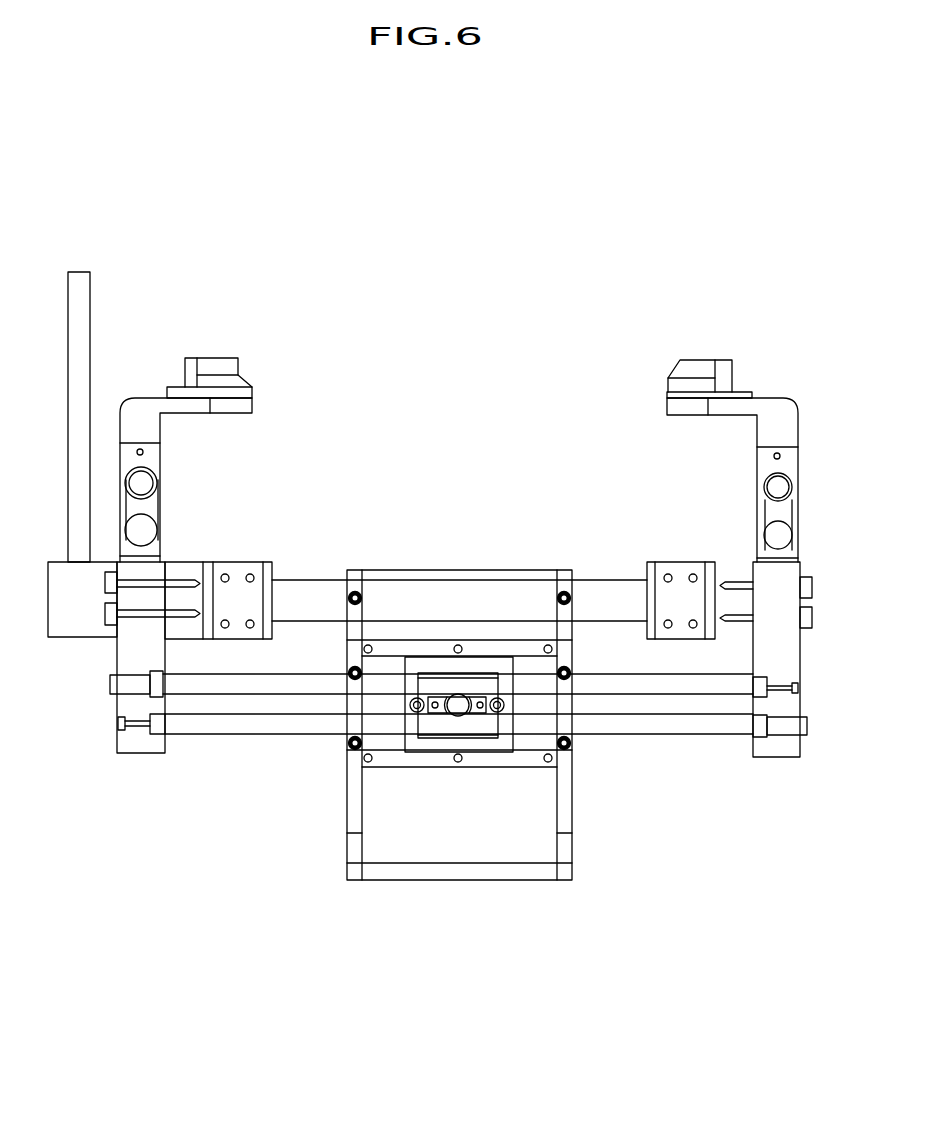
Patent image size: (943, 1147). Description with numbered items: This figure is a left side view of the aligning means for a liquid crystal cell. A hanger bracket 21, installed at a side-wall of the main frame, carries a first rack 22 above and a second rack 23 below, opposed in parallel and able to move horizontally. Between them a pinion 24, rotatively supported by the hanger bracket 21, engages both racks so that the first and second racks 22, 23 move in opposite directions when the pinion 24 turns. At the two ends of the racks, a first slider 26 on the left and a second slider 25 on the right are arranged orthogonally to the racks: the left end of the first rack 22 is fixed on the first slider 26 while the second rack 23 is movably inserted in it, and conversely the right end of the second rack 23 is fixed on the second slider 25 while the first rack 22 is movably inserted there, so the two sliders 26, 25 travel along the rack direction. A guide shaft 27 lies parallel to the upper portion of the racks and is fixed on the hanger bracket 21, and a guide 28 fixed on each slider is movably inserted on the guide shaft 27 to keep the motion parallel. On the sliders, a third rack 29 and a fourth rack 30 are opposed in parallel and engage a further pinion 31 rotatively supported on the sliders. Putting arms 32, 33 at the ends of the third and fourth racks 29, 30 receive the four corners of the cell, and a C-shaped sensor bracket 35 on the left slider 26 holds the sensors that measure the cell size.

The hanger bracket 21 is at (536, 870).
The first rack 22 is at (228, 685).
The second rack 23 is at (295, 725).
The pinion 24 is at (455, 708).
The second slider 25 is at (780, 747).
The first slider 26 is at (128, 657).
The guide shaft 27 is at (310, 590).
The guide 28 is at (235, 560).
The third rack 29 is at (780, 488).
The fourth rack 30 is at (780, 536).
The pinion 31 is at (777, 510).
The putting arm 32 is at (217, 365).
The putting arm 33 is at (702, 368).
The sensor bracket 35 is at (80, 293).